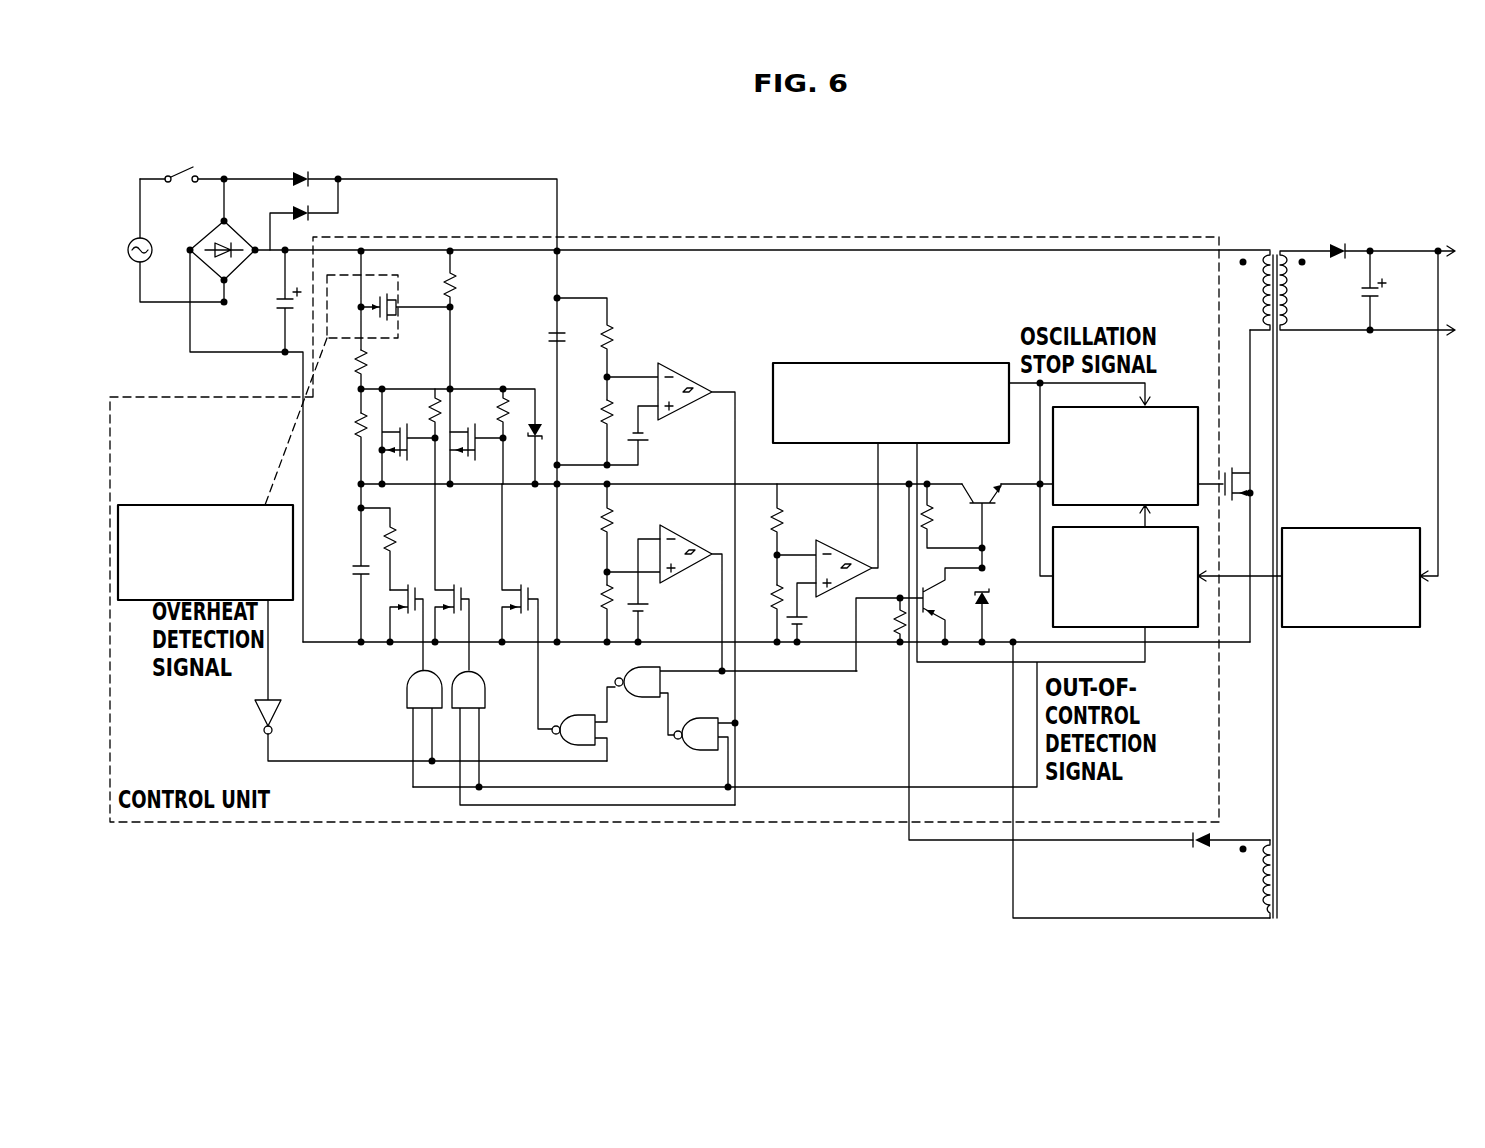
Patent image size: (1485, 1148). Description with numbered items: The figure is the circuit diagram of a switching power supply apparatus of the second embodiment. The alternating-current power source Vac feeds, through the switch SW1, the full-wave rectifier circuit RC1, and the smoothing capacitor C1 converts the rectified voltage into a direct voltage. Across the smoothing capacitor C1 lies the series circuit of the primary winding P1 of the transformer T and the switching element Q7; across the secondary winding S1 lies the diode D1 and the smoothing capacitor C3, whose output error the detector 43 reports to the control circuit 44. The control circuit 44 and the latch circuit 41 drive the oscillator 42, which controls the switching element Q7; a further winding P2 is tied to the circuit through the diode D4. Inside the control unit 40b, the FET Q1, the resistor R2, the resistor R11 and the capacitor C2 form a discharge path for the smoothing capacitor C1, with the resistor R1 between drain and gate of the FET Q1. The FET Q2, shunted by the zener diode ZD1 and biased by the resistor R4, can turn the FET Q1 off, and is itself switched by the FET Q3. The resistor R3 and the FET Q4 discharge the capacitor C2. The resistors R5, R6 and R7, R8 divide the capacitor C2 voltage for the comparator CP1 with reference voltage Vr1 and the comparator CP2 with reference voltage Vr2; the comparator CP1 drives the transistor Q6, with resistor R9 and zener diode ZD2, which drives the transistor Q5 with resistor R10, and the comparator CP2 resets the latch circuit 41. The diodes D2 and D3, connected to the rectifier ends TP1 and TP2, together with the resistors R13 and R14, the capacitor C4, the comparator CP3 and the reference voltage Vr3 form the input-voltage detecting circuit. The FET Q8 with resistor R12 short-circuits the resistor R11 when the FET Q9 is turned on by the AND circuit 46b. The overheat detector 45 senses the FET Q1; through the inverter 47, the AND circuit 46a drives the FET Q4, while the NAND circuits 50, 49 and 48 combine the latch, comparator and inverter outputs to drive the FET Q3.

The control unit 40b is at (800, 237).
The latch circuit 41 is at (942, 363).
The oscillator 42 is at (1155, 407).
The detector 43 is at (1398, 528).
The control circuit 44 is at (1175, 627).
The overheat detector 45 is at (190, 505).
The AND circuit 46a is at (400, 698).
The AND circuit 46b is at (487, 692).
The inverter 47 is at (255, 714).
The NAND circuit 48 is at (575, 712).
The NAND circuit 49 is at (662, 690).
The NAND circuit 50 is at (720, 740).
The switch SW1 is at (216, 162).
The one end of full-wave rectifier circuit TP1 is at (224, 221).
The another end of full-wave rectifier circuit TP2 is at (224, 302).
The full-wave rectifier circuit RC1 is at (231, 409).
The alternating-current power source Vac is at (139, 264).
The diode D1 is at (1332, 234).
The diode D2 is at (420, 196).
The diode D3 is at (297, 214).
The diode D4 is at (1227, 858).
The smoothing capacitor C1 is at (761, 301).
The capacitor C2 is at (343, 565).
The smoothing capacitor C3 is at (1382, 291).
The capacitor C4 is at (539, 336).
The FET Q1 is at (388, 299).
The FET Q2 is at (476, 454).
The FET Q3 is at (526, 606).
The FET Q4 is at (405, 613).
The transistor Q5 is at (981, 511).
The transistor Q6 is at (941, 607).
The switching element Q7 is at (1240, 483).
The FET Q8 is at (407, 437).
The FET Q9 is at (451, 577).
The resistor R1 is at (464, 368).
The resistor R2 is at (377, 381).
The resistor R3 is at (393, 549).
The resistor R4 is at (493, 435).
The resistor R5 is at (591, 534).
The resistor R6 is at (591, 614).
The resistor R7 is at (761, 534).
The resistor R8 is at (761, 614).
The resistor R9 is at (881, 633).
The resistor R10 is at (953, 518).
The resistor R11 is at (335, 450).
The resistor R12 is at (413, 436).
The resistor R13 is at (606, 349).
The resistor R14 is at (588, 433).
The zener diode ZD1 is at (522, 425).
The zener diode ZD2 is at (1001, 605).
The comparator CP1 is at (707, 508).
The comparator CP2 is at (863, 506).
The comparator CP3 is at (700, 380).
The reference voltage Vr1 is at (663, 592).
The reference voltage Vr2 is at (818, 614).
The reference voltage Vr3 is at (627, 435).
The transformer T is at (1269, 567).
The primary winding P1 is at (1250, 295).
The auxiliary primary winding P2 is at (1250, 878).
The secondary winding S1 is at (1297, 295).